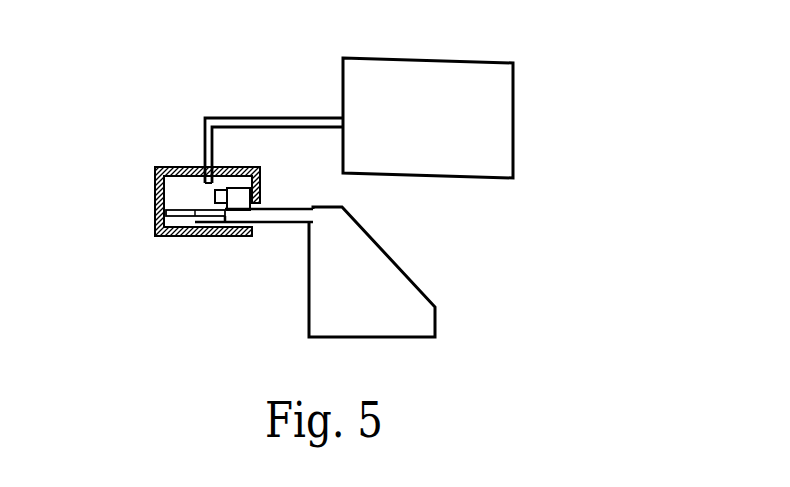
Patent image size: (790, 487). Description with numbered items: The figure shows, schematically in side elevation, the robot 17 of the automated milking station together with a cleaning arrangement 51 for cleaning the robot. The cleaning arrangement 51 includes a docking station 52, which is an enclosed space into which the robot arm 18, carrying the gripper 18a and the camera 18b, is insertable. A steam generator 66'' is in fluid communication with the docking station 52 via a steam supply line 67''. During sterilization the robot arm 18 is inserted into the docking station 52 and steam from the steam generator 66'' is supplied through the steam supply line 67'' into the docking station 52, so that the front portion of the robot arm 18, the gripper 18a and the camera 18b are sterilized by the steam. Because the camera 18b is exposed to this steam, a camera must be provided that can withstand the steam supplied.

The cleaning arrangement 51 is at (183, 102).
The steam generator 66'' is at (479, 118).
The steam supply line 67'' is at (274, 107).
The docking station 52 is at (155, 200).
The camera 18b is at (237, 195).
The gripper 18a is at (203, 237).
The robot arm 18 is at (278, 225).
The robot 17 is at (413, 280).